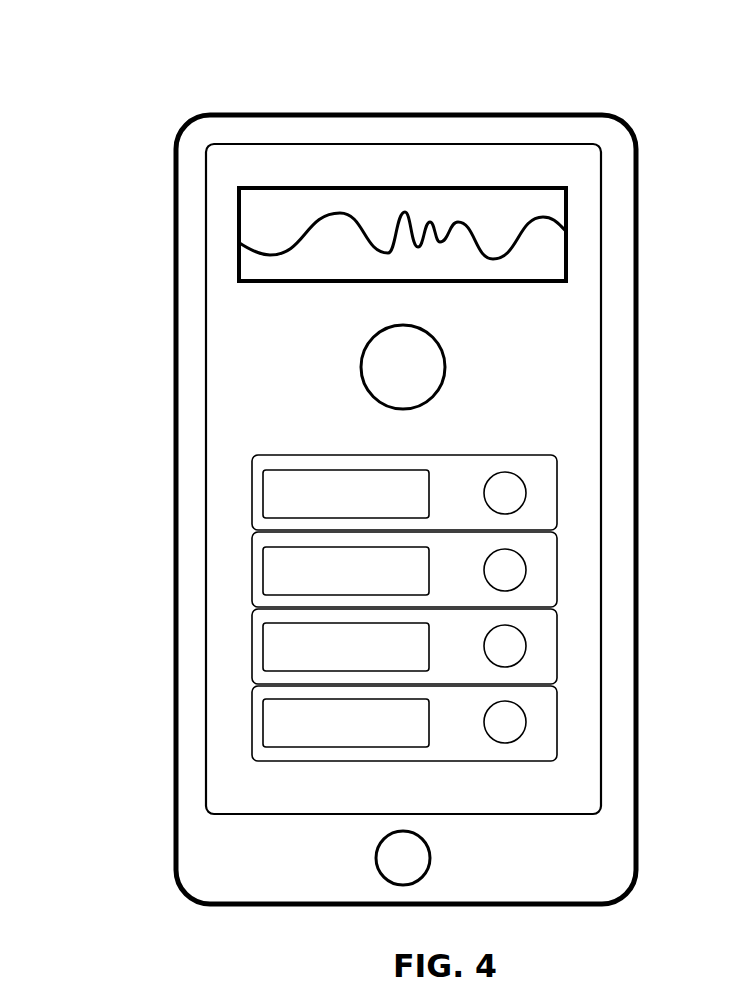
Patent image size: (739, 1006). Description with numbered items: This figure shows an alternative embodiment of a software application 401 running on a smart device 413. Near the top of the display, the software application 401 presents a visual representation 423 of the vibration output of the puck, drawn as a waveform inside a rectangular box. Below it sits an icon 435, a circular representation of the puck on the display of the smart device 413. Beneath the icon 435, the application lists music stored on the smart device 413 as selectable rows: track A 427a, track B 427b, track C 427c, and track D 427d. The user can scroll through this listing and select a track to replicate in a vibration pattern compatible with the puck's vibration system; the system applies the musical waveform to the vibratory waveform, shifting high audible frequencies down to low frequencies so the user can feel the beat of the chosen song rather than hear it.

The software application 401 is at (148, 107).
The visual representation 423 is at (348, 310).
The icon 435 is at (424, 379).
The track A 427a is at (413, 508).
The track B 427b is at (413, 584).
The track C 427c is at (413, 660).
The track D 427d is at (416, 736).
The smart device 413 is at (544, 872).